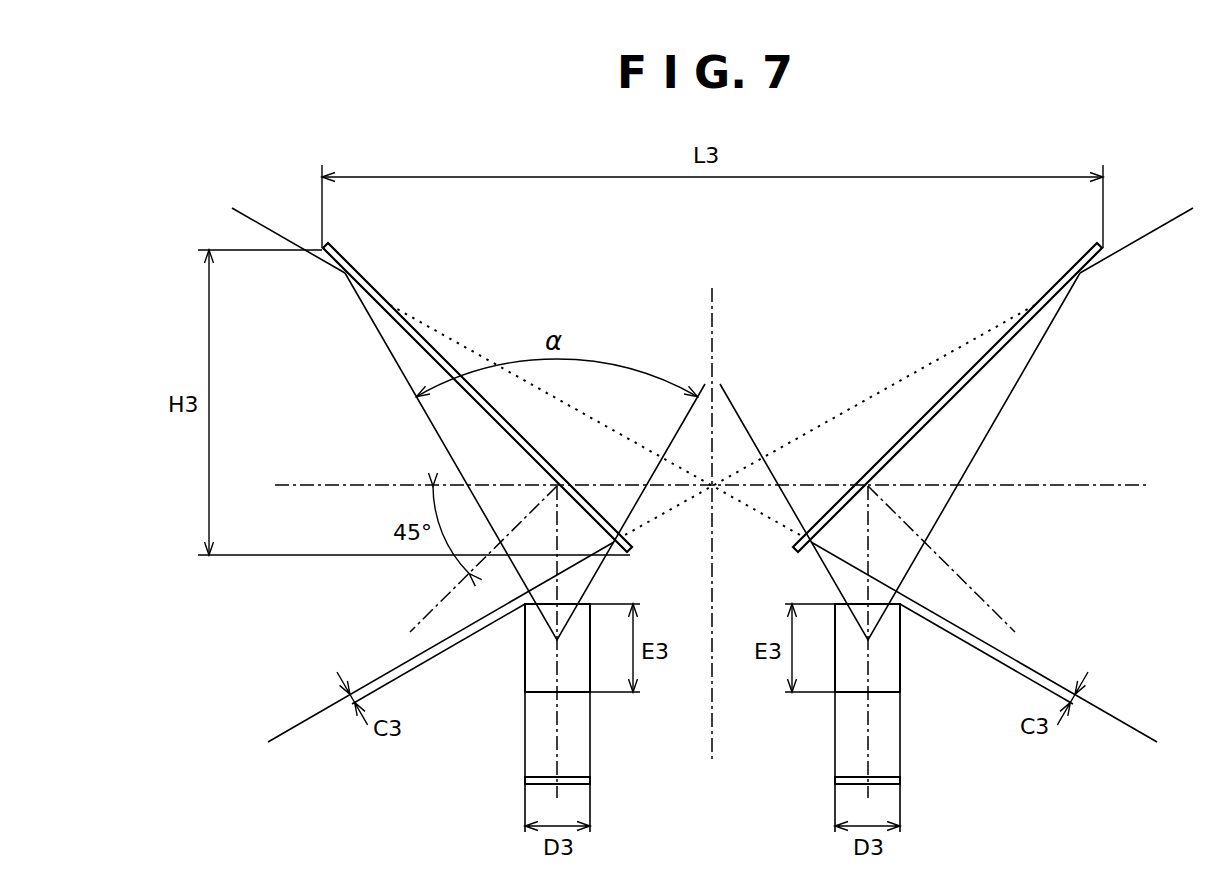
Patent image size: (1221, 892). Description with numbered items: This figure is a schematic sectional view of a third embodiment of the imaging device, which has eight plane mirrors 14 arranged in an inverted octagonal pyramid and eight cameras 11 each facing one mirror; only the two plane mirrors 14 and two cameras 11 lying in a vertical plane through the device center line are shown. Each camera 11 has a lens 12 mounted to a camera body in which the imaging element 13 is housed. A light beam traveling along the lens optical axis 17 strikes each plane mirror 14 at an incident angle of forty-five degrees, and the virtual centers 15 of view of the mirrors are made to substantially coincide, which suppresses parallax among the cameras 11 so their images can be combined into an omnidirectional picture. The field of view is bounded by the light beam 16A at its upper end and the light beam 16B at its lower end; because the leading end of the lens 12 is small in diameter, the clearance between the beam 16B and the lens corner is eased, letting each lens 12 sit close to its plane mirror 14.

The camera 11 is at (766, 735).
The lens 12 is at (572, 693).
The imaging element 13 is at (697, 813).
The plane mirror 14 is at (417, 333).
The virtual center of view 15 is at (716, 482).
The light beam 16A is at (258, 223).
The light beam 16B is at (297, 727).
The lens optical axis 17 is at (868, 550).